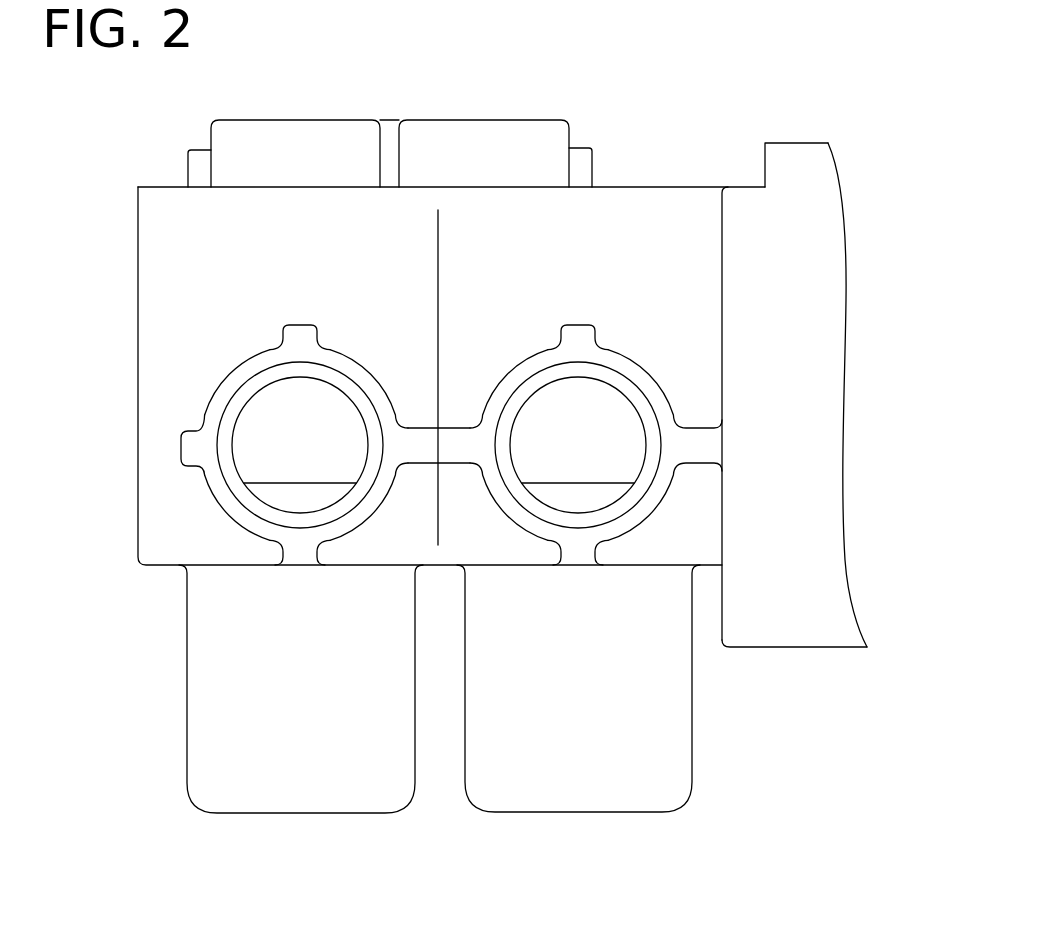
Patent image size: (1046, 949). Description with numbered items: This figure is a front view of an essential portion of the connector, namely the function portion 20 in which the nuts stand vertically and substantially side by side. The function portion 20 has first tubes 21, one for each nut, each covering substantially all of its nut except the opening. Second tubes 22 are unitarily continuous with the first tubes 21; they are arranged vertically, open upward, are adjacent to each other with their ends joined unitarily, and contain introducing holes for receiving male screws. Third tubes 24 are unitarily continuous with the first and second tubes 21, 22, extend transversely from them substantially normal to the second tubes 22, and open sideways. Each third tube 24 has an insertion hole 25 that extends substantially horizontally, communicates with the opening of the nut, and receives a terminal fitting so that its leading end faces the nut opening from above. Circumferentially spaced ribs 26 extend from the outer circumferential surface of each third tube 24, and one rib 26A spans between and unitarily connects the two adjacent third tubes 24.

The function portion 20 is at (697, 187).
The first tube 21 is at (245, 693).
The second tube 22 is at (622, 208).
The third tube 24 is at (643, 377).
The insertion hole 25 is at (648, 456).
The rib 26 is at (288, 332).
The rib 26A is at (462, 438).